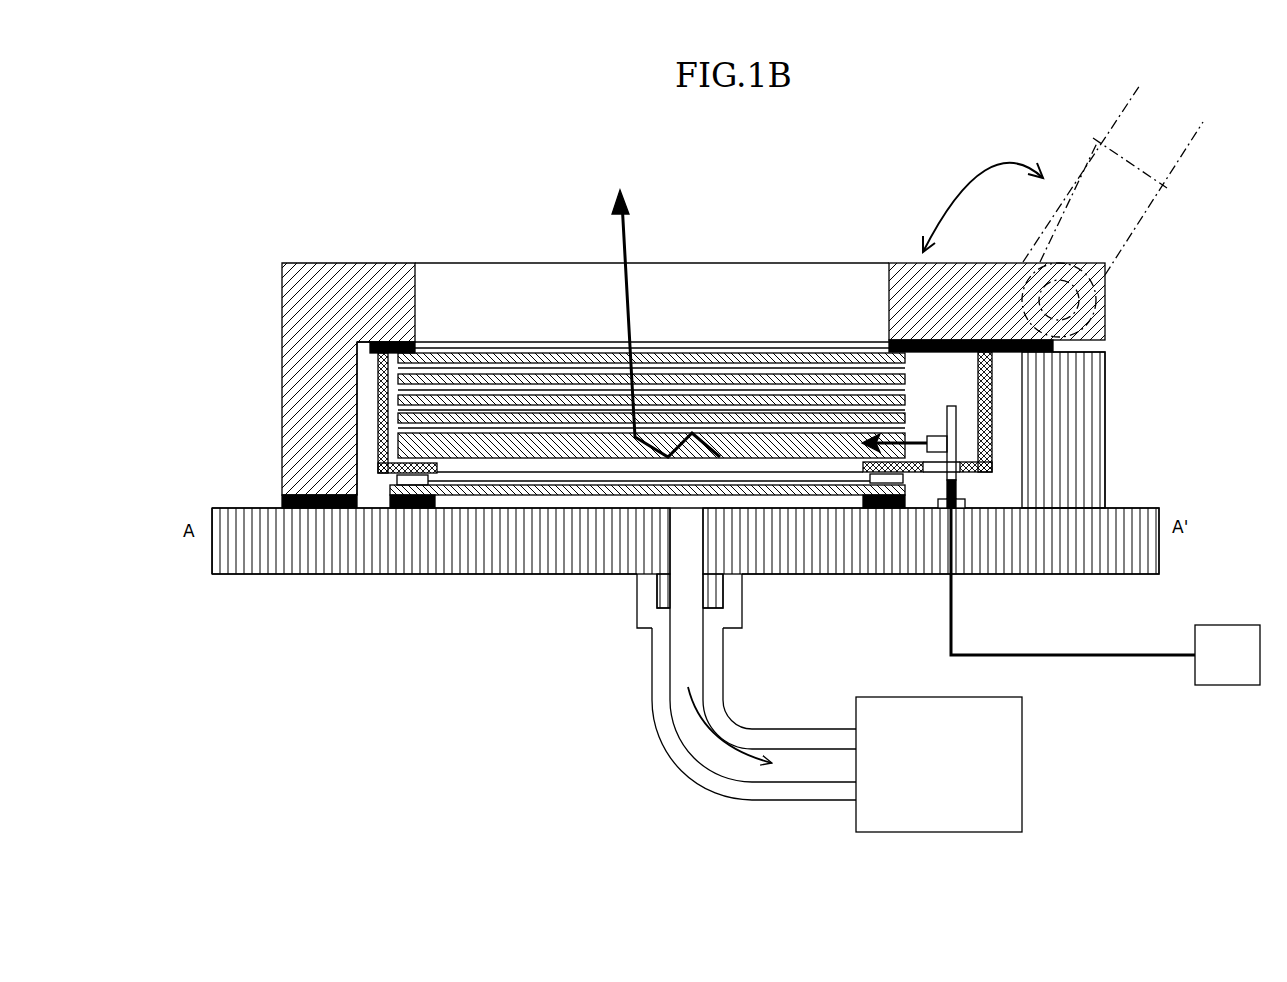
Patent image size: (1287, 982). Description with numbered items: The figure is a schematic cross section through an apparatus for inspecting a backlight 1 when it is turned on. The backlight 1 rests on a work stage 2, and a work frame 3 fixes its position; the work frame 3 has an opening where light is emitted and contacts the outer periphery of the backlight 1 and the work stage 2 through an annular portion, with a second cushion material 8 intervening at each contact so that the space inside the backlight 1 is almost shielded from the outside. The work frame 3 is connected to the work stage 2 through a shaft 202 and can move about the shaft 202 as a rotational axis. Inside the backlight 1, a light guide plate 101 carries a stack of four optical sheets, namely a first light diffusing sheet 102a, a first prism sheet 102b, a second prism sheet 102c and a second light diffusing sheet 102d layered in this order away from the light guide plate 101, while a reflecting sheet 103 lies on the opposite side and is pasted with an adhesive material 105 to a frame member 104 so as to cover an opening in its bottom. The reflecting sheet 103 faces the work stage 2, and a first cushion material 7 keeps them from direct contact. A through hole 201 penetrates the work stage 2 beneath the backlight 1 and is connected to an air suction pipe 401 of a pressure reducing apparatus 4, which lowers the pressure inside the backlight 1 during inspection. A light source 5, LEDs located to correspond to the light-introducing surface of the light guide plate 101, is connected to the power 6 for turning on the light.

The backlight 1 is at (376, 410).
The work stage 2 is at (270, 576).
The work frame 3 is at (280, 337).
The pressure reducing apparatus 4 is at (990, 767).
The light source 5 is at (937, 443).
The power 6 is at (1227, 657).
The first cushion material 7 is at (410, 508).
The second cushion material 8 is at (392, 340).
The light guide plate 101 is at (460, 448).
The first light diffusing sheet 102a is at (483, 412).
The first prism sheet 102b is at (520, 402).
The second prism sheet 102c is at (803, 380).
The second light diffusing sheet 102d is at (713, 360).
The reflecting sheet 103 is at (522, 488).
The frame member 104 is at (950, 388).
The adhesive material 105 is at (397, 477).
The through hole 201 is at (686, 542).
The shaft 202 is at (1062, 297).
The air suction pipe 401 is at (672, 753).